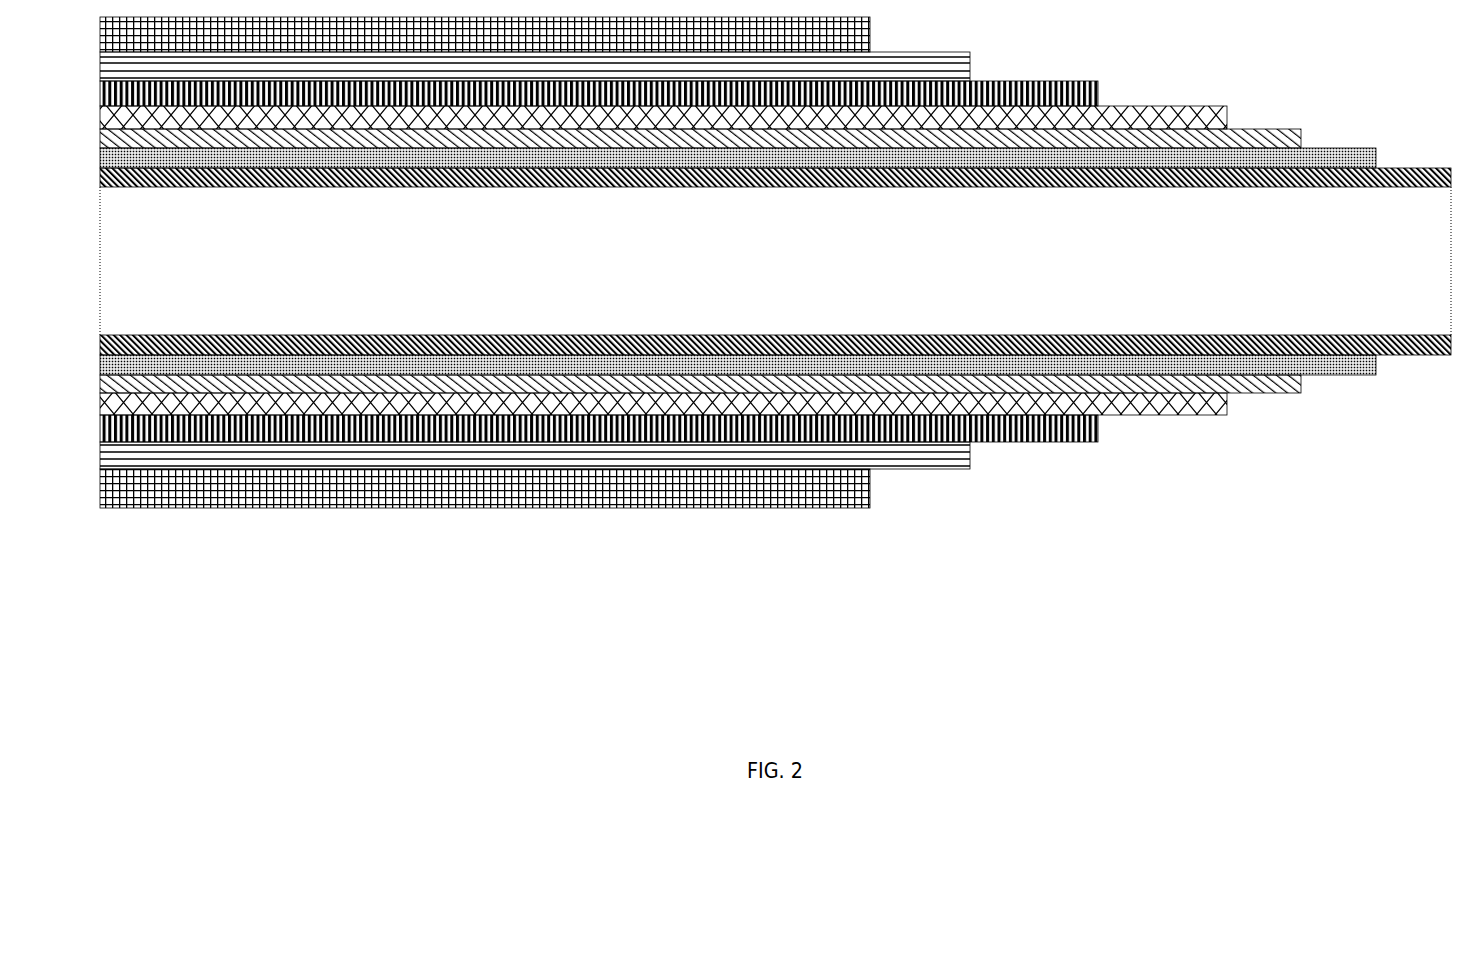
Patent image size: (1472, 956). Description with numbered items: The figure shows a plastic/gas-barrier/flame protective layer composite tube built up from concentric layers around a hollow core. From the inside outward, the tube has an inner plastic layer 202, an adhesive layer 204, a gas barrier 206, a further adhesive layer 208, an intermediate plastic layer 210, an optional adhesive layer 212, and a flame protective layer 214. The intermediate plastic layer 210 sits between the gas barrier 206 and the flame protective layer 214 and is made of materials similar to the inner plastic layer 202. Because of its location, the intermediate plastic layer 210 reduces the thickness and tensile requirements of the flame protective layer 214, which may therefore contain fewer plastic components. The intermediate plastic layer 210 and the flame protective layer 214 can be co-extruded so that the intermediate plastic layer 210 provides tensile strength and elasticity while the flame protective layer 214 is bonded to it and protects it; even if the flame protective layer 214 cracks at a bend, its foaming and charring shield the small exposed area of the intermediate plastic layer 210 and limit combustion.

The inner plastic layer 202 is at (1413, 355).
The adhesive layer 204 is at (1337, 375).
The gas barrier 206 is at (1260, 395).
The adhesive layer 208 is at (1185, 418).
The intermediate plastic layer 210 is at (1093, 440).
The optional adhesive layer 212 is at (968, 472).
The flame protective layer 214 is at (868, 508).